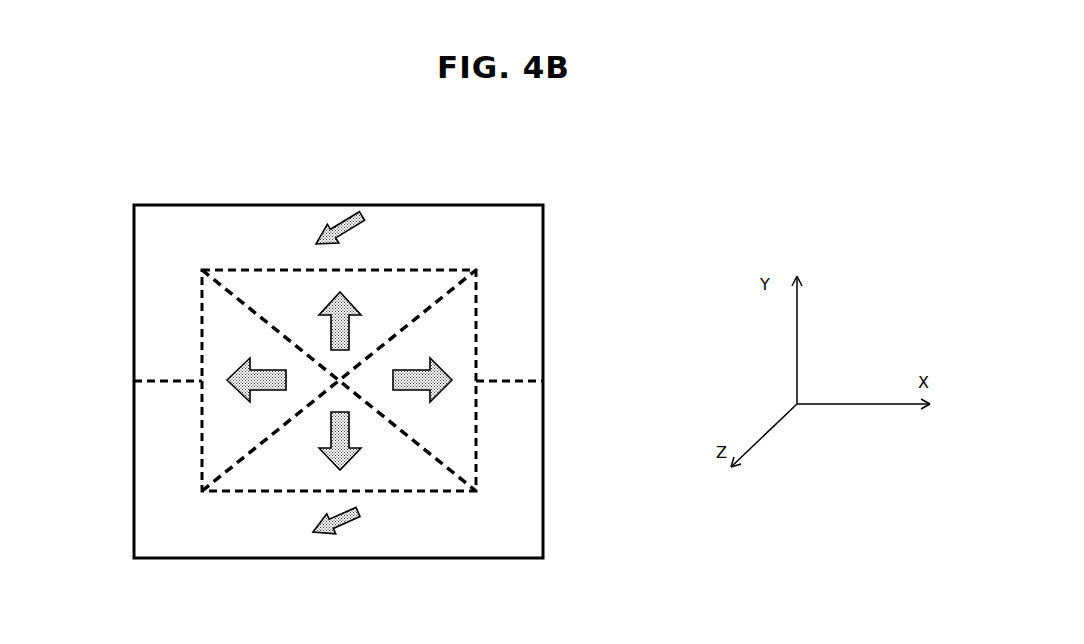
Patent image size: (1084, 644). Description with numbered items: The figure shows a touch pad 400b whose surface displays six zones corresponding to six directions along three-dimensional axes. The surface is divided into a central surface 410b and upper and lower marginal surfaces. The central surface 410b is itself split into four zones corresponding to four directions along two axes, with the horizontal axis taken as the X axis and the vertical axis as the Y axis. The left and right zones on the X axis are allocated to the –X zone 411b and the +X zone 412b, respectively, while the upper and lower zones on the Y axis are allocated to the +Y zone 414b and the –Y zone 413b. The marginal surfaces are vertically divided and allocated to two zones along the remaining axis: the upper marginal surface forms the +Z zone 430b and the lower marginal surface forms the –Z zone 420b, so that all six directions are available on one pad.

The touch pad 400b is at (566, 128).
The central surface 410b is at (478, 348).
The –X zone 411b is at (227, 432).
The +X zone 412b is at (452, 403).
The –Y zone 413b is at (408, 466).
The +Y zone 414b is at (284, 292).
The –Z zone 420b is at (283, 535).
The +Z zone 430b is at (430, 227).